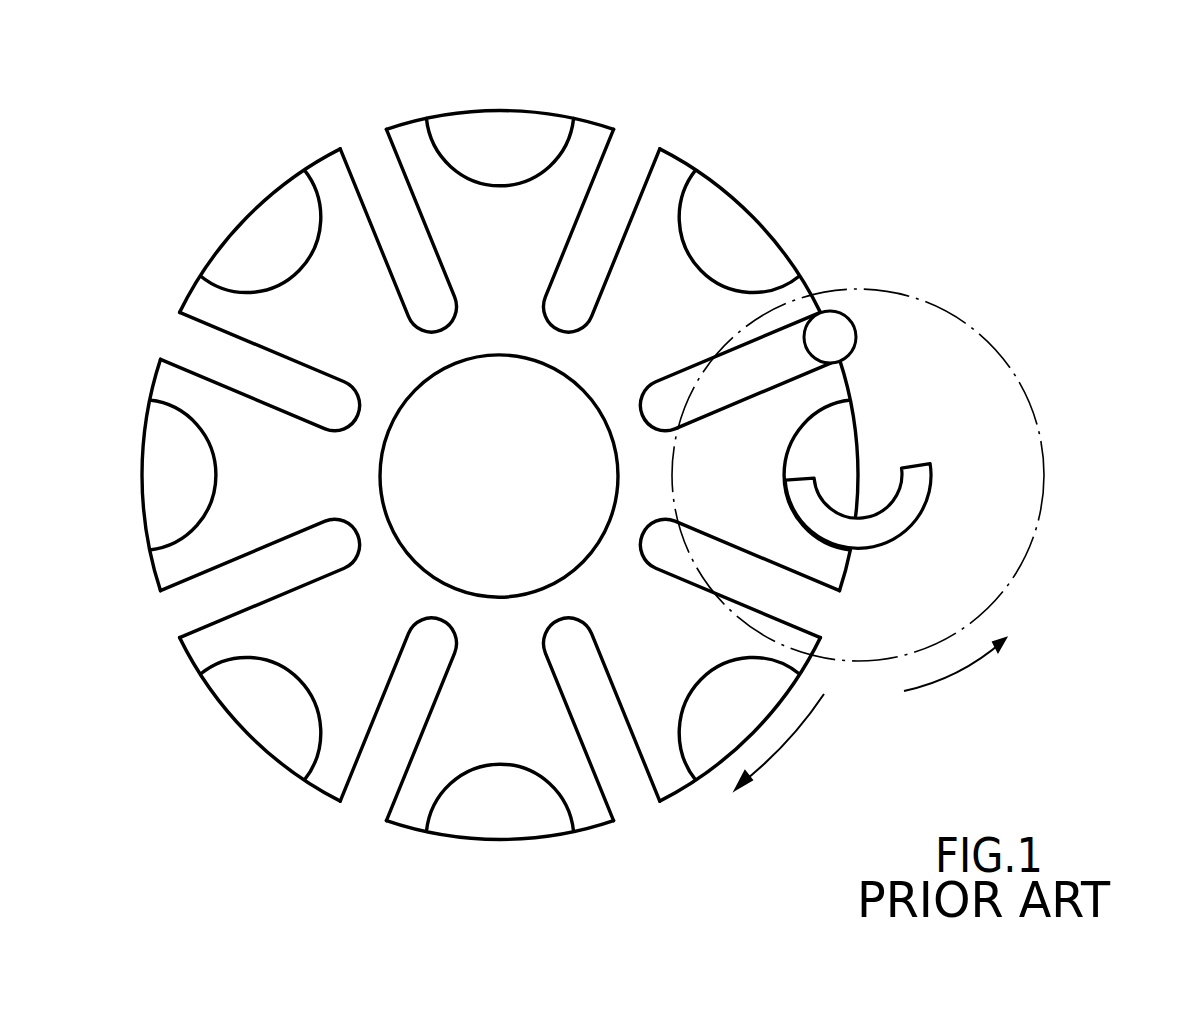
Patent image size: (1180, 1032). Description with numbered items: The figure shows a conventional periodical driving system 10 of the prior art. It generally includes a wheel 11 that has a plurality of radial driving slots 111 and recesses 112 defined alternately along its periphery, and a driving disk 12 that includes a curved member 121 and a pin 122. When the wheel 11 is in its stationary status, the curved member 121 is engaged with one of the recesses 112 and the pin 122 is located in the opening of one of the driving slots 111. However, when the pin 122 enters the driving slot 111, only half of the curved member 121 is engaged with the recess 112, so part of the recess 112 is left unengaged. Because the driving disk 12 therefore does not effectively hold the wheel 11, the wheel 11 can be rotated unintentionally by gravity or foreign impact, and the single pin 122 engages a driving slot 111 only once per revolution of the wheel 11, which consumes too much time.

The periodical driving system 10 is at (632, 438).
The wheel 11 is at (668, 183).
The radial driving slot 111 is at (668, 397).
The recess 112 is at (832, 457).
The driving disk 12 is at (904, 522).
The curved member 121 is at (897, 522).
The pin 122 is at (832, 336).